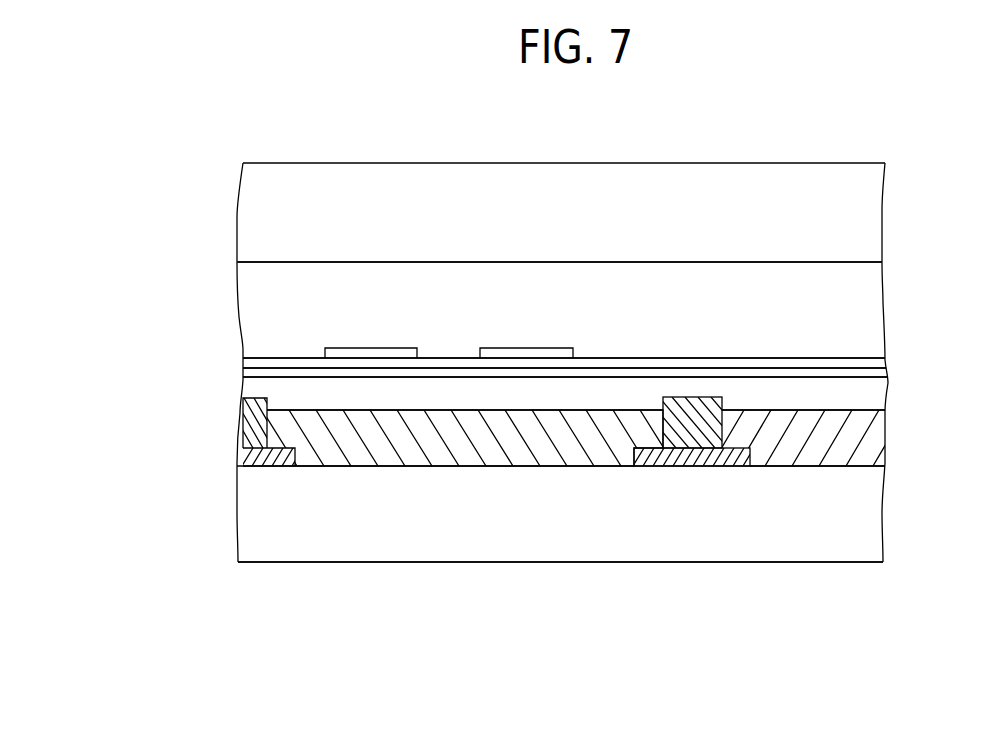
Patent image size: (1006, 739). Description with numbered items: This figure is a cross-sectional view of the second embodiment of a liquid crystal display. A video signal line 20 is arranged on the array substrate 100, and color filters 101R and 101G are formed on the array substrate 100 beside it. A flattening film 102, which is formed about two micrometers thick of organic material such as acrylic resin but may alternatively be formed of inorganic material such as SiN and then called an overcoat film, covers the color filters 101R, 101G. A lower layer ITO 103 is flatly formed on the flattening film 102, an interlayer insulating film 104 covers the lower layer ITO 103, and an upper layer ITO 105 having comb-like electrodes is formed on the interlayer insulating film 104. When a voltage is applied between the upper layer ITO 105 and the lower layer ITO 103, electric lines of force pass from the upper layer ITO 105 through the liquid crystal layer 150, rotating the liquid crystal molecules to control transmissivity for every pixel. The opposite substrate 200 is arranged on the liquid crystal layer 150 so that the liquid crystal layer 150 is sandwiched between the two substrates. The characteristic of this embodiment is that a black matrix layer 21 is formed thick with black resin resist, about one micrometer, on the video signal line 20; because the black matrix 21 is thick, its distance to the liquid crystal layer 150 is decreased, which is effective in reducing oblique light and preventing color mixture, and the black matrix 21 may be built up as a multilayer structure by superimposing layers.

The opposite substrate 200 is at (857, 214).
The liquid crystal layer 150 is at (857, 306).
The upper layer ITO 105 is at (378, 348).
The interlayer insulating film 104 is at (880, 360).
The lower layer ITO 103 is at (865, 378).
The flattening film 102 is at (870, 398).
The color filter 101R is at (438, 443).
The color filter 101G is at (830, 440).
The black matrix layer 21 is at (703, 427).
The video signal line 20 is at (675, 460).
The array substrate 100 is at (860, 518).